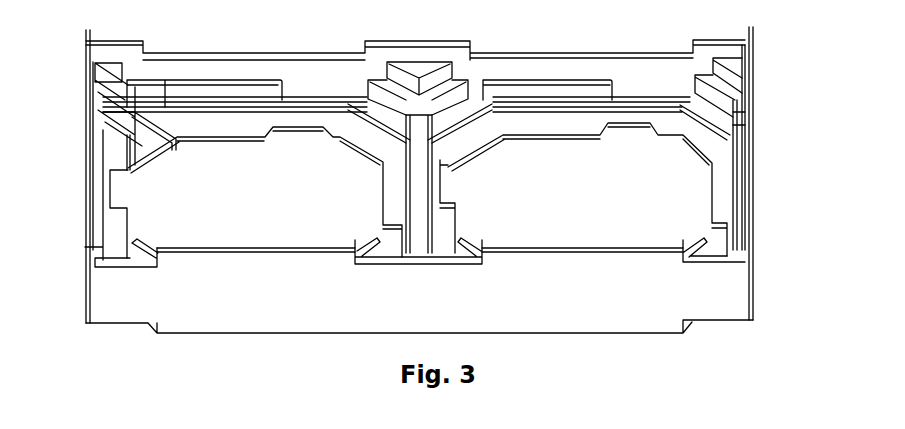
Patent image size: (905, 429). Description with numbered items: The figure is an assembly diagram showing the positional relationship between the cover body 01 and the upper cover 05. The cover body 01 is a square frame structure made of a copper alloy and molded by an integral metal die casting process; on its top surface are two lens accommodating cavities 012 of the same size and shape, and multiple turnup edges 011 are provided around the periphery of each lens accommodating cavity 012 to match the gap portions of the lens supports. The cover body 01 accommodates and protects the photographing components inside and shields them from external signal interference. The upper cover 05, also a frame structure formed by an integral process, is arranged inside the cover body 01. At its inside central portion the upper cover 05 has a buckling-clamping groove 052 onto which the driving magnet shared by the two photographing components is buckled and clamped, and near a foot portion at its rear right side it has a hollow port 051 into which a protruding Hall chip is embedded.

The cover body 01 is at (655, 303).
The turnup edge 011 is at (135, 150).
The lens accommodating cavity 012 is at (640, 218).
The upper cover 05 is at (118, 112).
The hollow port 051 is at (658, 88).
The buckling-clamping groove 052 is at (420, 172).